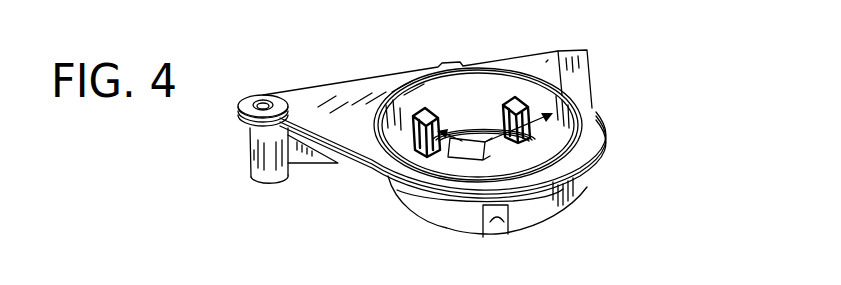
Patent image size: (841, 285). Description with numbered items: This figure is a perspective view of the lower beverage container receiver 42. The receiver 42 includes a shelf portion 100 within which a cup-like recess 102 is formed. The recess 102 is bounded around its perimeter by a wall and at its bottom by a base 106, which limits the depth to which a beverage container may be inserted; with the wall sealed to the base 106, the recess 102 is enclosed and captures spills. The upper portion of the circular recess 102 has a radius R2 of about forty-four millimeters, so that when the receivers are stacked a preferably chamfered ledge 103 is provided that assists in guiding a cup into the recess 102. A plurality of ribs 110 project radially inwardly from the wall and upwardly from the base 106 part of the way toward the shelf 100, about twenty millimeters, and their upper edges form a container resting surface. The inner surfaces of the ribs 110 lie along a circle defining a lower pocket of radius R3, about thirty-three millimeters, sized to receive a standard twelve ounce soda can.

The lower beverage container receiver 42 is at (618, 118).
The shelf portion 100 is at (544, 62).
The cup-like recess 102 is at (489, 128).
The ledge 103 is at (563, 97).
The base 106 is at (463, 155).
The ribs 110 is at (428, 113).
The radius of the upper portion of the recess R2 is at (492, 138).
The radius of the lower pocket R3 is at (451, 138).